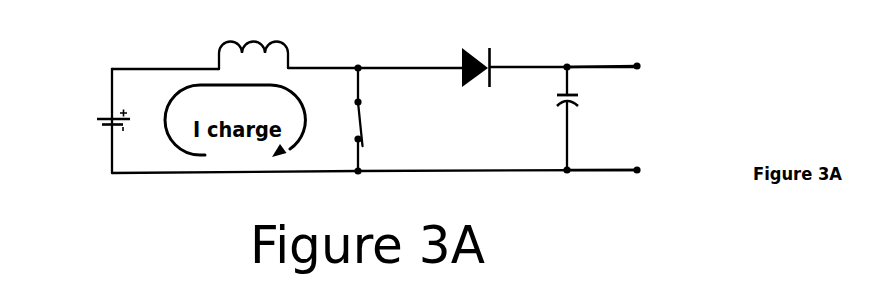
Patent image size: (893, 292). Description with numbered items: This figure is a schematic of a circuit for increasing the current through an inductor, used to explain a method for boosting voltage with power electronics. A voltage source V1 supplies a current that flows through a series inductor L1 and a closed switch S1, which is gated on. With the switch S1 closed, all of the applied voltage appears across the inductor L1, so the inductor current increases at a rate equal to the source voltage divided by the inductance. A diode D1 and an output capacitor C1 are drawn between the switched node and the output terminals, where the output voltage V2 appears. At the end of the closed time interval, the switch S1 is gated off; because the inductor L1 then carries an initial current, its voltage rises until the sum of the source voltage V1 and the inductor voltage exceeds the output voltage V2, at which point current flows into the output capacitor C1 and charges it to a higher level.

The voltage source V1 is at (76, 126).
The series inductor L1 is at (228, 51).
The switch S1 is at (380, 119).
The diode D1 is at (452, 61).
The output capacitor C1 is at (585, 118).
The output voltage V2 is at (634, 118).